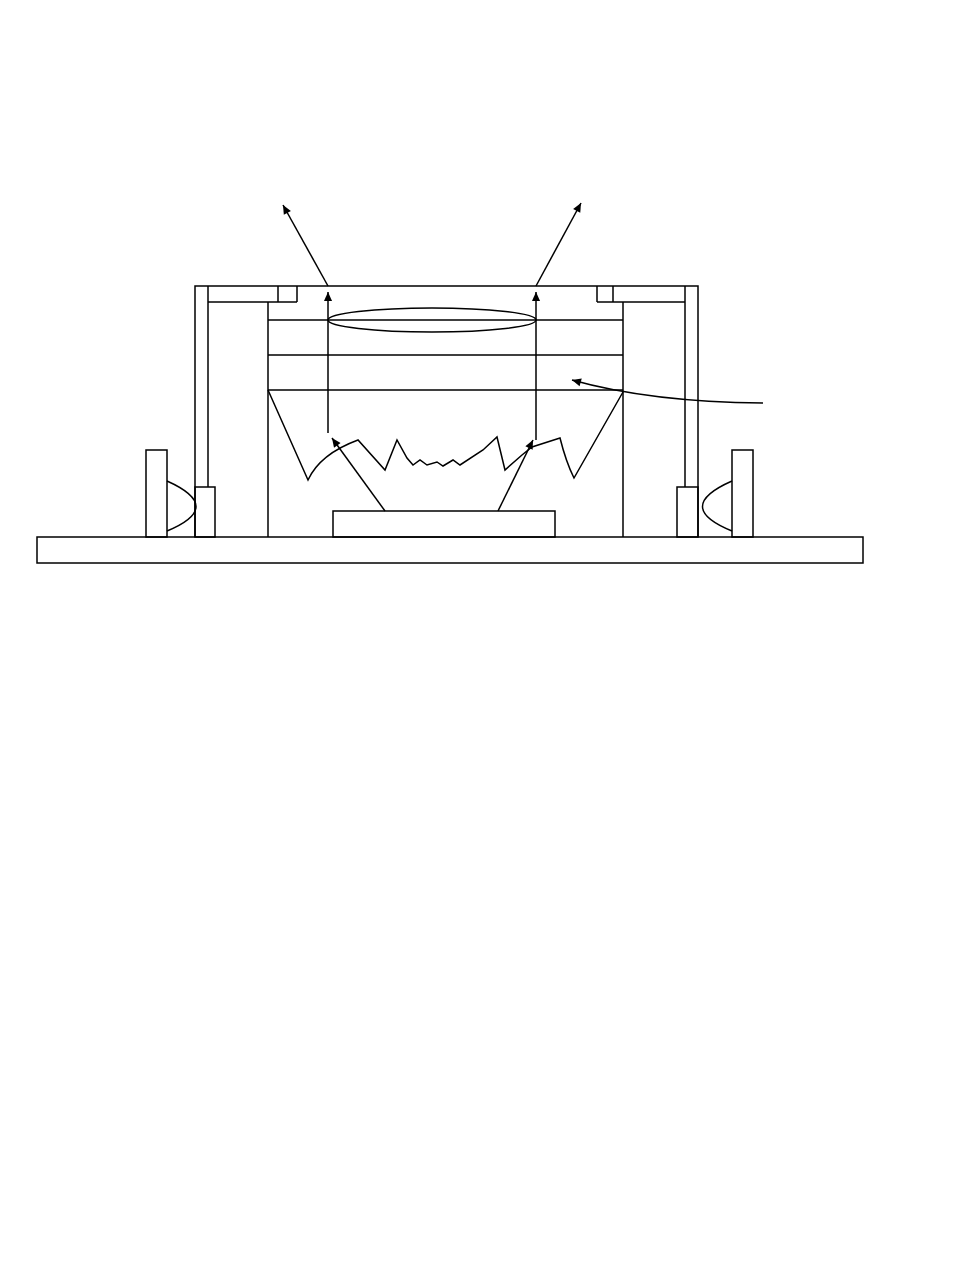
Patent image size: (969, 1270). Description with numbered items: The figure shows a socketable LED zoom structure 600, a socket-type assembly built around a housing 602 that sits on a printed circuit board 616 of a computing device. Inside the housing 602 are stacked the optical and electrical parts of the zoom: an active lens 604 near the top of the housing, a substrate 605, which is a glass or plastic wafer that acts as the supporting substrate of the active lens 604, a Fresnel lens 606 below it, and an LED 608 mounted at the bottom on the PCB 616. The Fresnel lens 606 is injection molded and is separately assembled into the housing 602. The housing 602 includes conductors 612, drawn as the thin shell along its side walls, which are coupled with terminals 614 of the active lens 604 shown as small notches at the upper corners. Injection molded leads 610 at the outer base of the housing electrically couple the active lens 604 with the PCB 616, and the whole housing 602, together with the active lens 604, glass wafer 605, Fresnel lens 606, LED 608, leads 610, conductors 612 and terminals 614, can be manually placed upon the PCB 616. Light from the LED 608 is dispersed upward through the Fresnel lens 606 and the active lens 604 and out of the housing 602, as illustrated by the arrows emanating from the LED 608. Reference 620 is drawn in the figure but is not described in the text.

The socketable LED zoom structure 600 is at (472, 1107).
The housing 602 is at (232, 92).
The active lens 604 is at (410, 298).
The substrate 605 is at (695, 399).
The Fresnel lens 606 is at (308, 446).
The LED 608 is at (498, 528).
The injection molded leads 610 is at (207, 528).
The conductors 612 is at (195, 368).
The terminals 614 is at (277, 286).
The printed circuit board 616 is at (414, 554).
The lens barrel 620 is at (535, 370).